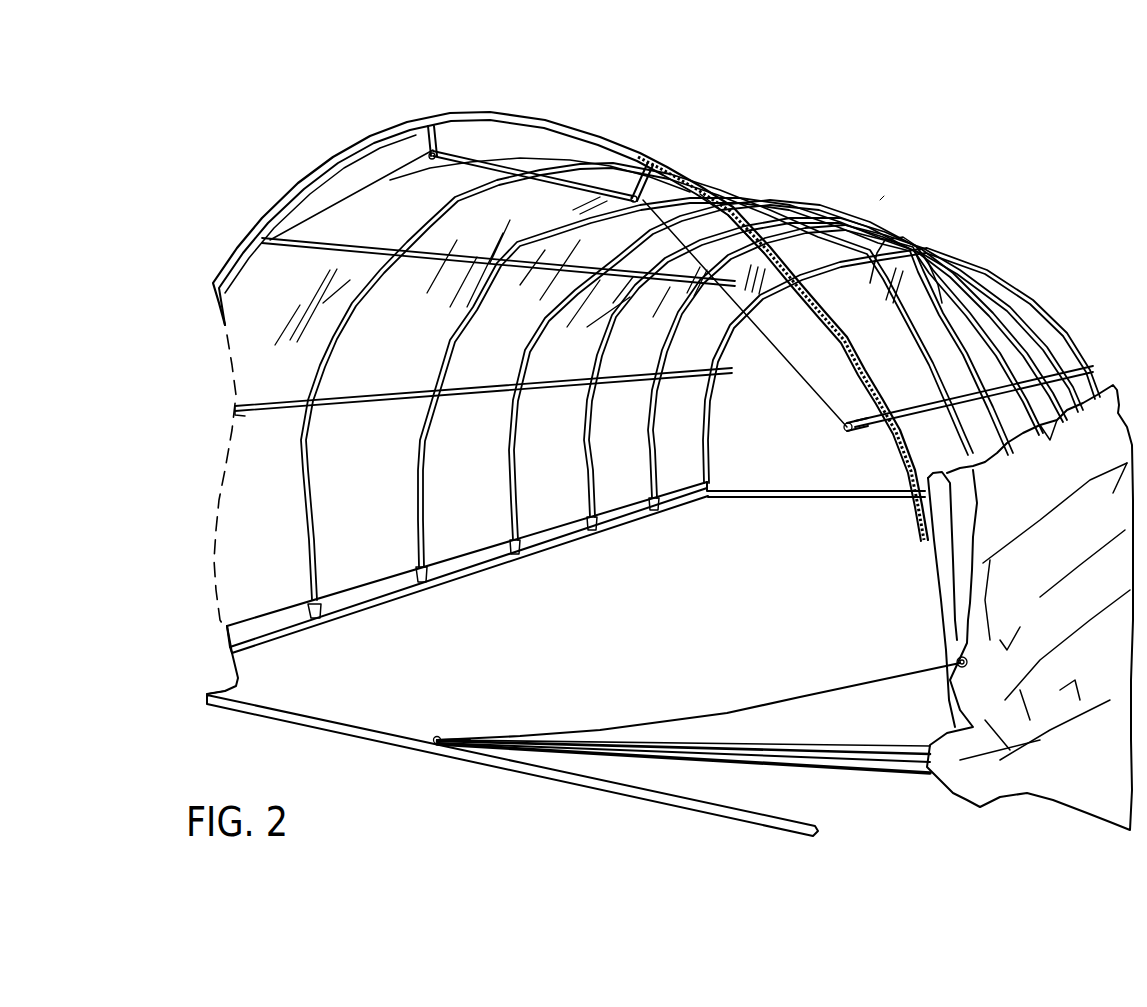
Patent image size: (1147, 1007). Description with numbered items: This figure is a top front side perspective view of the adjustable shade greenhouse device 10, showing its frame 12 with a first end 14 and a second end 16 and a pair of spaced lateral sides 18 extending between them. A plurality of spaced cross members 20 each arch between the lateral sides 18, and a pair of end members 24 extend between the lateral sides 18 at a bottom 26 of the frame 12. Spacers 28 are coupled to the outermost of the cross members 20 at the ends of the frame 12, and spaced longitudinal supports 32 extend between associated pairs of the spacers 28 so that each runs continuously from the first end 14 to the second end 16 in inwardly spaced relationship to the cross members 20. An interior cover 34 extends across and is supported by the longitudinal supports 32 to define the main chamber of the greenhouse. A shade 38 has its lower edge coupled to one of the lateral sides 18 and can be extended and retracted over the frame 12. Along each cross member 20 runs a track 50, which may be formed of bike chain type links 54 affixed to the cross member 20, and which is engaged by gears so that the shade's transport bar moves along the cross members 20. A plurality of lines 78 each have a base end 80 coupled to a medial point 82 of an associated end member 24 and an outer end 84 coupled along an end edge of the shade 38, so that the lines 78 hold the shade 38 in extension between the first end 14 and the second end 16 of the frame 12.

The adjustable shade greenhouse device 10 is at (874, 206).
The frame 12 is at (1052, 300).
The first end 14 is at (346, 160).
The second end 16 is at (970, 266).
The lateral sides 18 is at (508, 561).
The cross members 20 is at (906, 238).
The end members 24 is at (369, 734).
The bottom 26 is at (354, 742).
The spacers 28 is at (426, 146).
The longitudinal supports 32 is at (497, 160).
The interior cover 34 is at (832, 270).
The shade 38 is at (934, 540).
The tracks 50 is at (805, 272).
The bike chain type links 54 is at (745, 245).
The lines 78 is at (728, 712).
The base end 80 is at (437, 737).
The medial point 82 is at (444, 740).
The outer end 84 is at (956, 660).